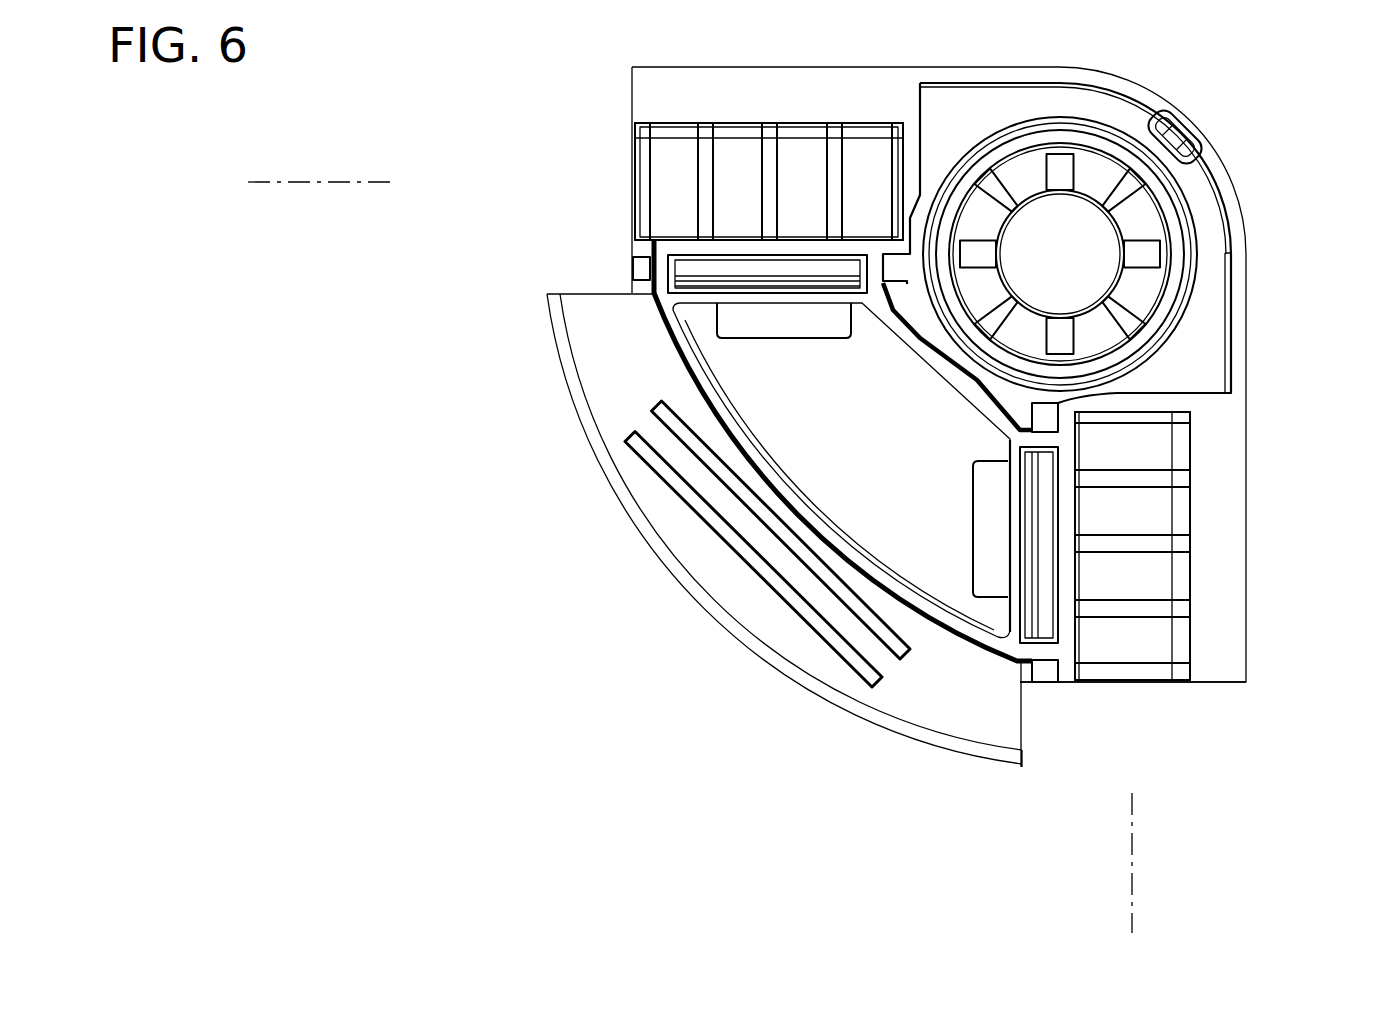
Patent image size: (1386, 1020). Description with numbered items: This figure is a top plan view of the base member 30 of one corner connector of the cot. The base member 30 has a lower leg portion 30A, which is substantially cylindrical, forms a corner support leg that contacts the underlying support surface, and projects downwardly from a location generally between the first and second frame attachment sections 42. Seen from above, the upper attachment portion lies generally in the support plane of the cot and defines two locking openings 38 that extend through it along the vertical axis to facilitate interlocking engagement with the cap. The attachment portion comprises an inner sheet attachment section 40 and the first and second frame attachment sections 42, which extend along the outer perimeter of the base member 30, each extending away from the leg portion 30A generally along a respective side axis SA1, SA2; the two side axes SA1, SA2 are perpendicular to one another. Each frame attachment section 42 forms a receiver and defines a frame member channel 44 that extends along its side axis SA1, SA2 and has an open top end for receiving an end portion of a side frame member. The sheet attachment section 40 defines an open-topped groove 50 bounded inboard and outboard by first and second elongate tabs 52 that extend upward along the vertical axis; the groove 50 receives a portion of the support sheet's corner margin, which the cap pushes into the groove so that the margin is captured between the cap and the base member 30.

The base member 30 is at (779, 475).
The leg portion 30A is at (1217, 683).
The locking openings 38 is at (780, 318).
The sheet attachment section 40 is at (937, 715).
The frame attachment sections 42 is at (695, 80).
The frame member channel 44 is at (740, 181).
The groove 50 is at (719, 573).
The elongate tabs 52 is at (660, 468).
The side axis SA1 is at (1133, 923).
The side axis SA2 is at (268, 185).